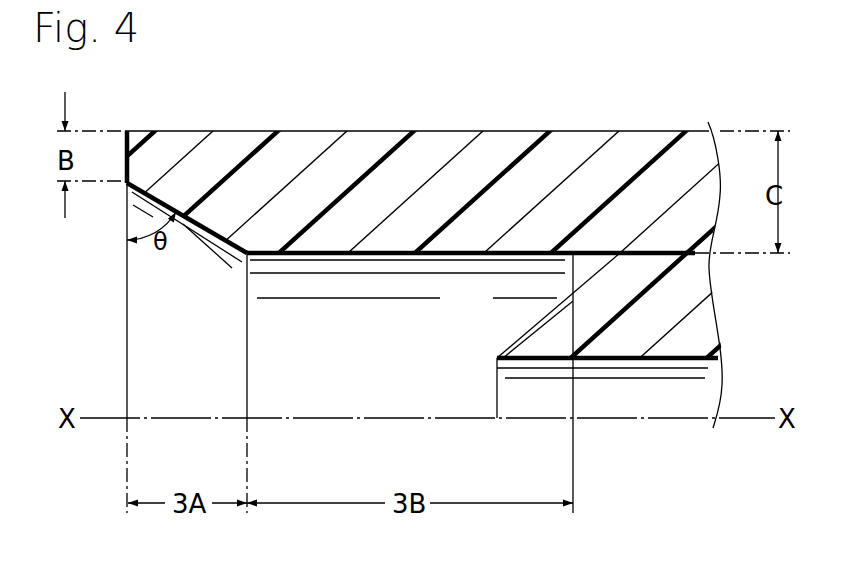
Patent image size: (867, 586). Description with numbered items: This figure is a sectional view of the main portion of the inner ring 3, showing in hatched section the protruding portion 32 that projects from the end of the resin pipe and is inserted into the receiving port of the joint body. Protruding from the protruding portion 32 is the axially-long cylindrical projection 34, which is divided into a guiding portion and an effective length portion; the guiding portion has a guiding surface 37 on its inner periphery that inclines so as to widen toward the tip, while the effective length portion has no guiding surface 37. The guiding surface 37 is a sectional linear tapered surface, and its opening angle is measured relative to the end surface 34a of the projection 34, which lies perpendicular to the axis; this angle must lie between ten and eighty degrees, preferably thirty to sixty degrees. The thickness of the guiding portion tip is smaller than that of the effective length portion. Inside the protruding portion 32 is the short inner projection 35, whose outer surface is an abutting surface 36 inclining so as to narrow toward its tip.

The inner ring 3 is at (655, 126).
The protruding portion 32 is at (703, 285).
The axially-long cylindrical projection 34 is at (440, 140).
The end surface 34a is at (127, 143).
The short inner projection 35 is at (535, 362).
The abutting surface 36 is at (521, 340).
The guiding surface 37 is at (208, 229).